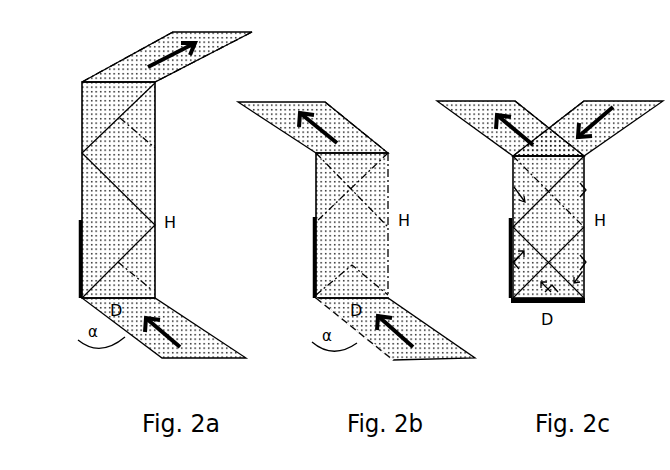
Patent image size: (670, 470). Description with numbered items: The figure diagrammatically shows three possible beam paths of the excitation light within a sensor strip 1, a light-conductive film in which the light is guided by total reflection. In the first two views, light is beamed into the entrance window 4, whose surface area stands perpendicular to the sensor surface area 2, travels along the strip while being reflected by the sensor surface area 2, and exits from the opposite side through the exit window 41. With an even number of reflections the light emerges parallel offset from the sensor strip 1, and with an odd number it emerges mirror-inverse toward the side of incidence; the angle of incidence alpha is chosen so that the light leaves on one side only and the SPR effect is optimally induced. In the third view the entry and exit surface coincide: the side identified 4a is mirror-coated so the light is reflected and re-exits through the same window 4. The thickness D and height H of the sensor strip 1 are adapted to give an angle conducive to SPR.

In FIG. 2a, the sensor strip 1 is at (155, 147).
In FIG. 2b, the sensor strip 1 is at (316, 188).
In FIG. 2c, the sensor strip 1 is at (513, 185).
In FIG. 2a, the sensor surface area 2 is at (80, 252).
In FIG. 2b, the sensor surface area 2 is at (313, 262).
In FIG. 2c, the sensor surface area 2 is at (510, 263).
In FIG. 2a, the entrance window 4 is at (130, 297).
In FIG. 2b, the entrance window 4 is at (313, 297).
In FIG. 2c, the mirror-coated side 4a is at (518, 309).
In FIG. 2a, the exit window 41 is at (127, 82).